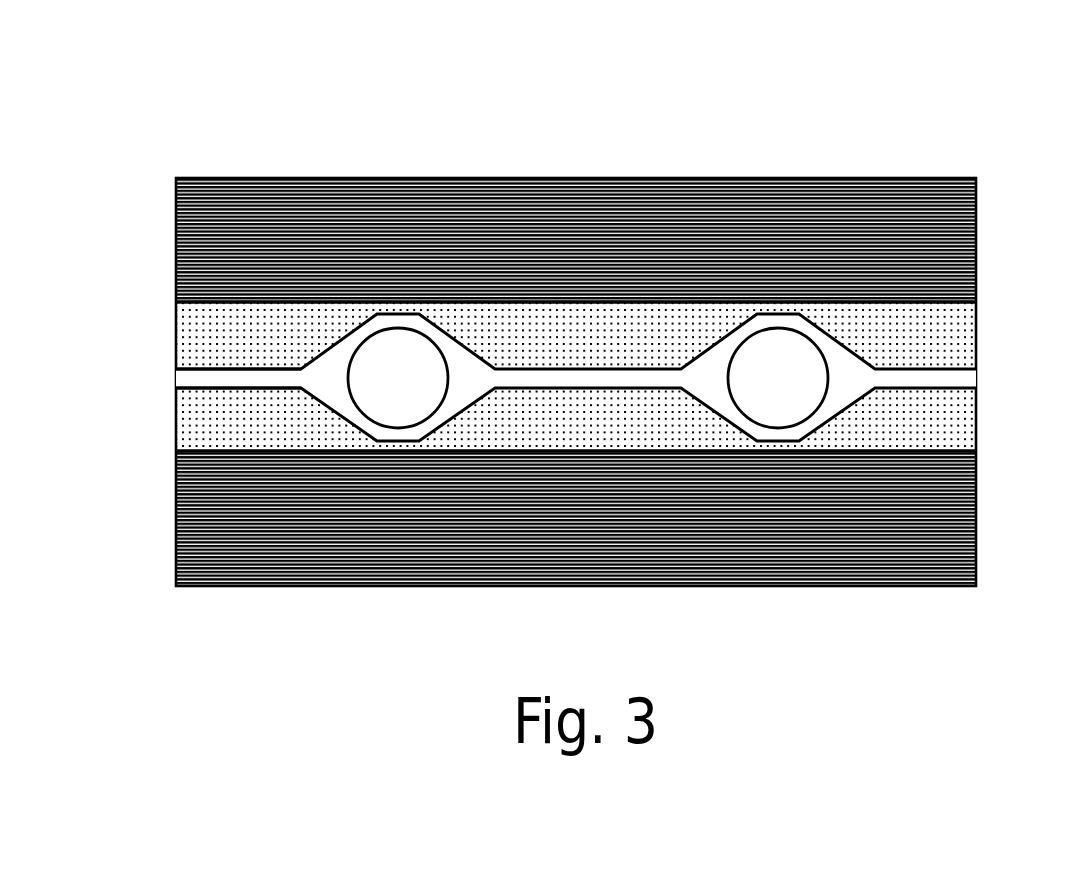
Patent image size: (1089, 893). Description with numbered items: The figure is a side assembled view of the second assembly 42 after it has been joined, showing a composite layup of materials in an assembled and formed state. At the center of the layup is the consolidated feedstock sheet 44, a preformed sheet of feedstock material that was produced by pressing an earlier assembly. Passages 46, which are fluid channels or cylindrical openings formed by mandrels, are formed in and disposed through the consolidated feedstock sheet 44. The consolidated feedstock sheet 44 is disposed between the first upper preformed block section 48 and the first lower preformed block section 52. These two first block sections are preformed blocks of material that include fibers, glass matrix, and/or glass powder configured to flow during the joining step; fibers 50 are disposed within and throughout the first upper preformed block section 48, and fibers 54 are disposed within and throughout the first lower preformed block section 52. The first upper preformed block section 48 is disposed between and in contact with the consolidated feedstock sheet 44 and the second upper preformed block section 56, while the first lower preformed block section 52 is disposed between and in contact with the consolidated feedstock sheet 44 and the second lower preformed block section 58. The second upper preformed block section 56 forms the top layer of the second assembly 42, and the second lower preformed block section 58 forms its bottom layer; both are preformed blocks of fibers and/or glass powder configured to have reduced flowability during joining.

The second assembly 42 is at (322, 157).
The consolidated feedstock sheet 44 is at (968, 367).
The passages 46 is at (428, 338).
The first upper preformed block section 48 is at (968, 323).
The fibers 50 is at (202, 327).
The first lower preformed block section 52 is at (968, 413).
The fibers 54 is at (202, 408).
The second upper preformed block section 56 is at (968, 224).
The second lower preformed block section 58 is at (968, 477).